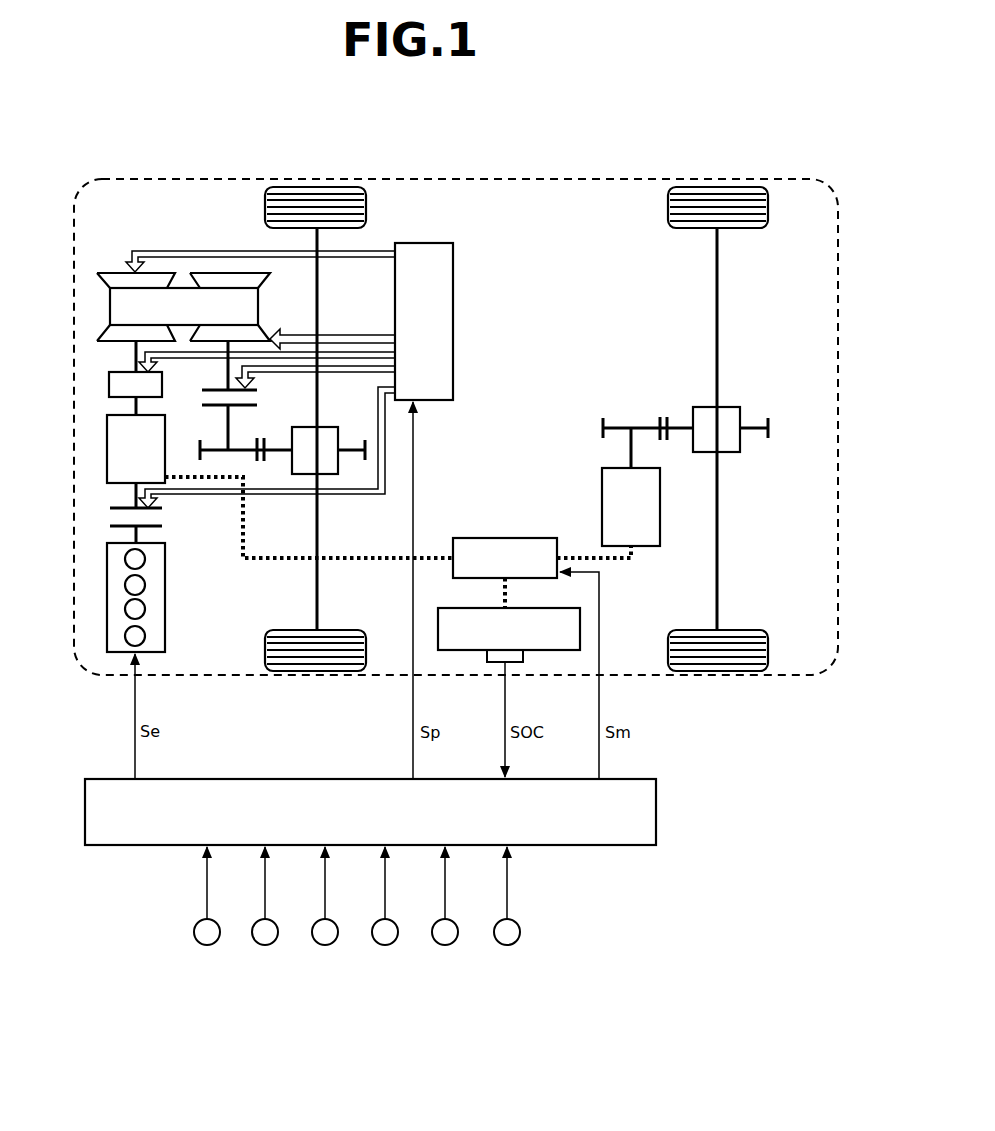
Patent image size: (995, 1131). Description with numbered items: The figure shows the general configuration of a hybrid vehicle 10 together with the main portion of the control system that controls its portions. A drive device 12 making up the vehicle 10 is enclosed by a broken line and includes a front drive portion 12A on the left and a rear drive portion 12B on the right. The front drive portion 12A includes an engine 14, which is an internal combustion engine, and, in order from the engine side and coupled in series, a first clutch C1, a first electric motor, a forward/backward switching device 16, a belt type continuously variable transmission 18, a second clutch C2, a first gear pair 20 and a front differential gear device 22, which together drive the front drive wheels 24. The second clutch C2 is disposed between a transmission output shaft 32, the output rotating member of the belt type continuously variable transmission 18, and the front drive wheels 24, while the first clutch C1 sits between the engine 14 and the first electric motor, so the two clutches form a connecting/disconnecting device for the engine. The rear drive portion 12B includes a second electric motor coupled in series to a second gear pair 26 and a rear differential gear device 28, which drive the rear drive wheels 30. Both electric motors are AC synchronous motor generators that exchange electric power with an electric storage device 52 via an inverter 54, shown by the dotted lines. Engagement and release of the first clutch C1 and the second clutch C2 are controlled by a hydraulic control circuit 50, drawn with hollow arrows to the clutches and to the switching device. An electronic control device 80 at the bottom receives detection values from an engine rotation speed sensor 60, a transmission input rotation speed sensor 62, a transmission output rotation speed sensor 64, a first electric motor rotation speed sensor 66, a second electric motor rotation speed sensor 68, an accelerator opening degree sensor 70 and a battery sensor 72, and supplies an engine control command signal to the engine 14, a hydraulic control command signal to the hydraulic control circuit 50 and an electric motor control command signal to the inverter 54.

The hybrid vehicle 10 is at (106, 163).
The drive device 12 is at (503, 198).
The front drive portion 12A is at (215, 590).
The rear drive portion 12B is at (605, 398).
The engine 14 is at (113, 608).
The forward/backward switching device 16 is at (127, 375).
The belt type continuously variable transmission 18 is at (94, 302).
The first gear pair 20 is at (260, 435).
The front differential gear device 22 is at (332, 430).
The front drive wheels 24 is at (338, 197).
The second gear pair 26 is at (661, 406).
The rear differential gear device 28 is at (733, 410).
The rear drive wheels 30 is at (733, 196).
The transmission output shaft 32 is at (226, 376).
The hydraulic control circuit 50 is at (430, 244).
The electric storage device 52 is at (545, 612).
The inverter 54 is at (534, 541).
The engine rotation speed sensor 60 is at (207, 945).
The transmission input rotation speed sensor 62 is at (265, 945).
The transmission output rotation speed sensor 64 is at (325, 945).
The first electric motor rotation speed sensor 66 is at (385, 945).
The second electric motor rotation speed sensor 68 is at (445, 945).
The accelerator opening degree sensor 70 is at (507, 945).
The battery sensor 72 is at (487, 657).
The electronic control device 80 is at (632, 788).
The first clutch C1 is at (121, 515).
The second clutch C2 is at (213, 398).